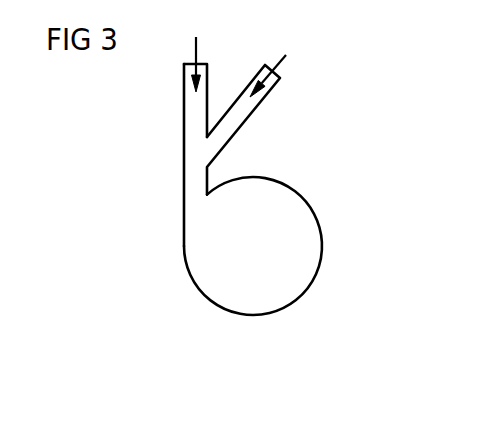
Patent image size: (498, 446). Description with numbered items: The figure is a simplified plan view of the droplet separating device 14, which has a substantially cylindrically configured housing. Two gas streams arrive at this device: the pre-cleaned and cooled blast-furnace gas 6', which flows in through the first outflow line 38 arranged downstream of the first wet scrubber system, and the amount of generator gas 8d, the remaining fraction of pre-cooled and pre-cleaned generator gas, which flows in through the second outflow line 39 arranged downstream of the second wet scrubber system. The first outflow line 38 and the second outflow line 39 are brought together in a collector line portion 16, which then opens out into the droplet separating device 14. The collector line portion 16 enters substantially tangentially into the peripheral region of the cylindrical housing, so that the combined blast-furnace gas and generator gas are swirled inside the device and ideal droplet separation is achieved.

The droplet separating device 14 is at (319, 242).
The collector line portion 16 is at (190, 187).
The first outflow line 38 is at (190, 101).
The second outflow line 39 is at (243, 110).
The pre-cleaned blast-furnace gas 6' is at (176, 61).
The amount of generator gas 8d is at (282, 60).